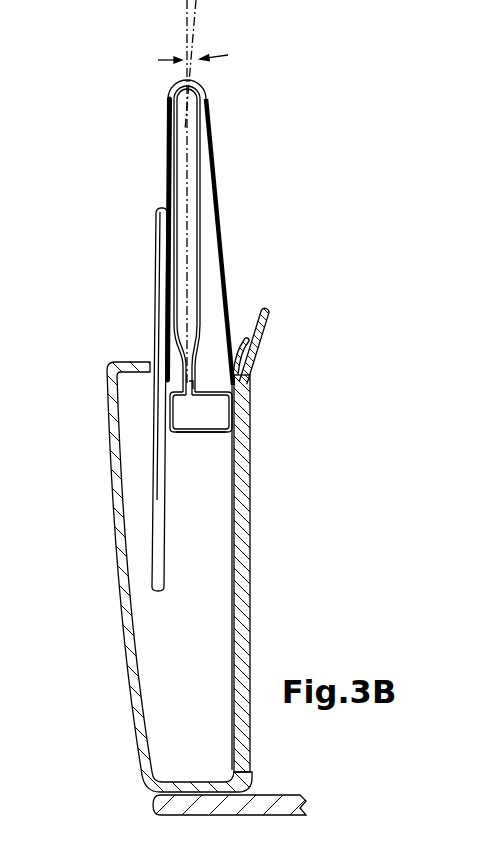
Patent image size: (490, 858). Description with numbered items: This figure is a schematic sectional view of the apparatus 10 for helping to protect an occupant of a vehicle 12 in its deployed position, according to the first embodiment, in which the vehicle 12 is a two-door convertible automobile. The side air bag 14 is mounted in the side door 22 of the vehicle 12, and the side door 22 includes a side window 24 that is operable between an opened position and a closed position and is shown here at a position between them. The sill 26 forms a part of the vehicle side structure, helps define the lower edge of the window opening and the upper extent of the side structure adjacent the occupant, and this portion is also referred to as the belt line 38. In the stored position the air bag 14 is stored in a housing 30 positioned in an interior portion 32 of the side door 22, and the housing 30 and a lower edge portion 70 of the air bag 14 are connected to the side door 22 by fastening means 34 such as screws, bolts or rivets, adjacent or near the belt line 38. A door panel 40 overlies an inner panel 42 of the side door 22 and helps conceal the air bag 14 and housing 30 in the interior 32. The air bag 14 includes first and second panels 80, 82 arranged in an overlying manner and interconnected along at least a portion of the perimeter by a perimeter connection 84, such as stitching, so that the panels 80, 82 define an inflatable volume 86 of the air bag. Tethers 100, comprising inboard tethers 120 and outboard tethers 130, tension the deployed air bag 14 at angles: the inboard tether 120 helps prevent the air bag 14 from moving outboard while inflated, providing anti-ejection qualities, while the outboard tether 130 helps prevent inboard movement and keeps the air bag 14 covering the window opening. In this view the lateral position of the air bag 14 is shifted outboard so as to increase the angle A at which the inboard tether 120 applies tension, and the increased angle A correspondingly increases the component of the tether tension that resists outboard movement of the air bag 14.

The apparatus 10 is at (311, 236).
The vehicle 12 is at (72, 352).
The side air bag 14 is at (230, 236).
The side door 22 is at (125, 623).
The side window 24 is at (99, 399).
The sill 26 is at (140, 364).
The housing 30 is at (178, 437).
The interior portion 32 is at (188, 495).
The fastening means 34 is at (190, 388).
The belt line 38 is at (264, 345).
The door panel 40 is at (245, 575).
The inner panel 42 is at (235, 597).
The lower edge portion 70 is at (143, 437).
The first panel 80 is at (171, 172).
The second panel 82 is at (217, 198).
The perimeter connection 84 is at (188, 345).
The inflatable volume 86 is at (188, 220).
The tethers 100 is at (201, 345).
The inboard tethers 120 is at (288, 242).
The outboard tethers 130 is at (163, 246).
The angle A is at (197, 62).